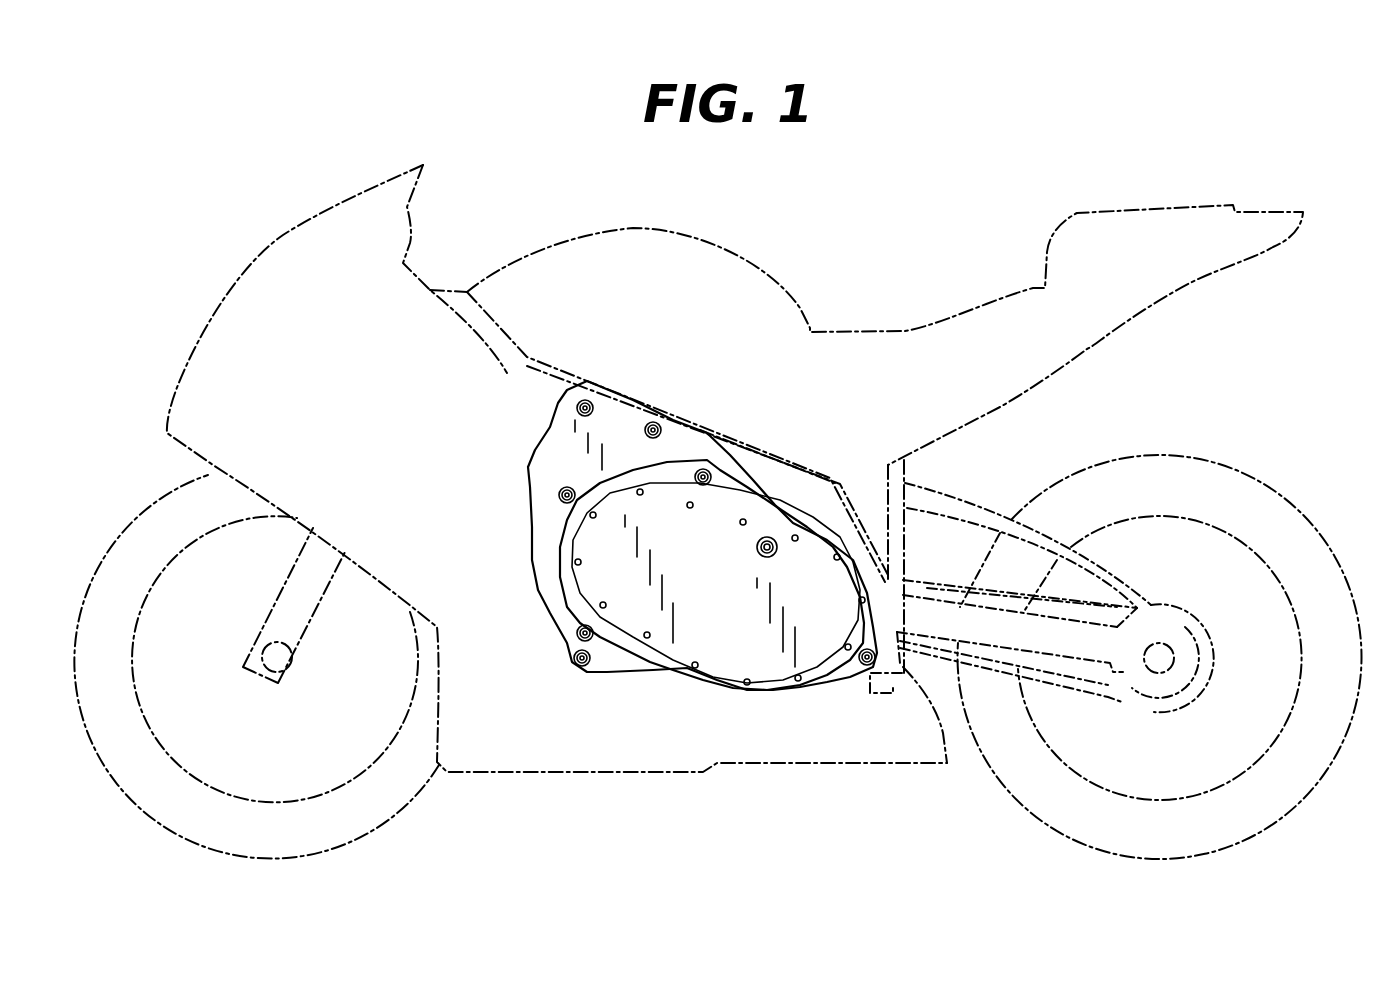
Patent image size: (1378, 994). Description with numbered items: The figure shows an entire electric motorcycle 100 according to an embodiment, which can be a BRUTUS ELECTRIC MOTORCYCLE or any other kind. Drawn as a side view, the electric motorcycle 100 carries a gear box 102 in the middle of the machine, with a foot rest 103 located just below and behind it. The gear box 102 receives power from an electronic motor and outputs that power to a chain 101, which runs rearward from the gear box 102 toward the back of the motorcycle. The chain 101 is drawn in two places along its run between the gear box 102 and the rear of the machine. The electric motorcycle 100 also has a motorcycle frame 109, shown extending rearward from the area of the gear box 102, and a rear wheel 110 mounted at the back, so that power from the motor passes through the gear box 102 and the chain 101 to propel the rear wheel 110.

The electric motorcycle 100 is at (832, 242).
The chain 101 is at (913, 583).
The gear box 102 is at (669, 692).
The foot rest 103 is at (891, 695).
The motorcycle frame 109 is at (993, 517).
The rear wheel 110 is at (1228, 483).